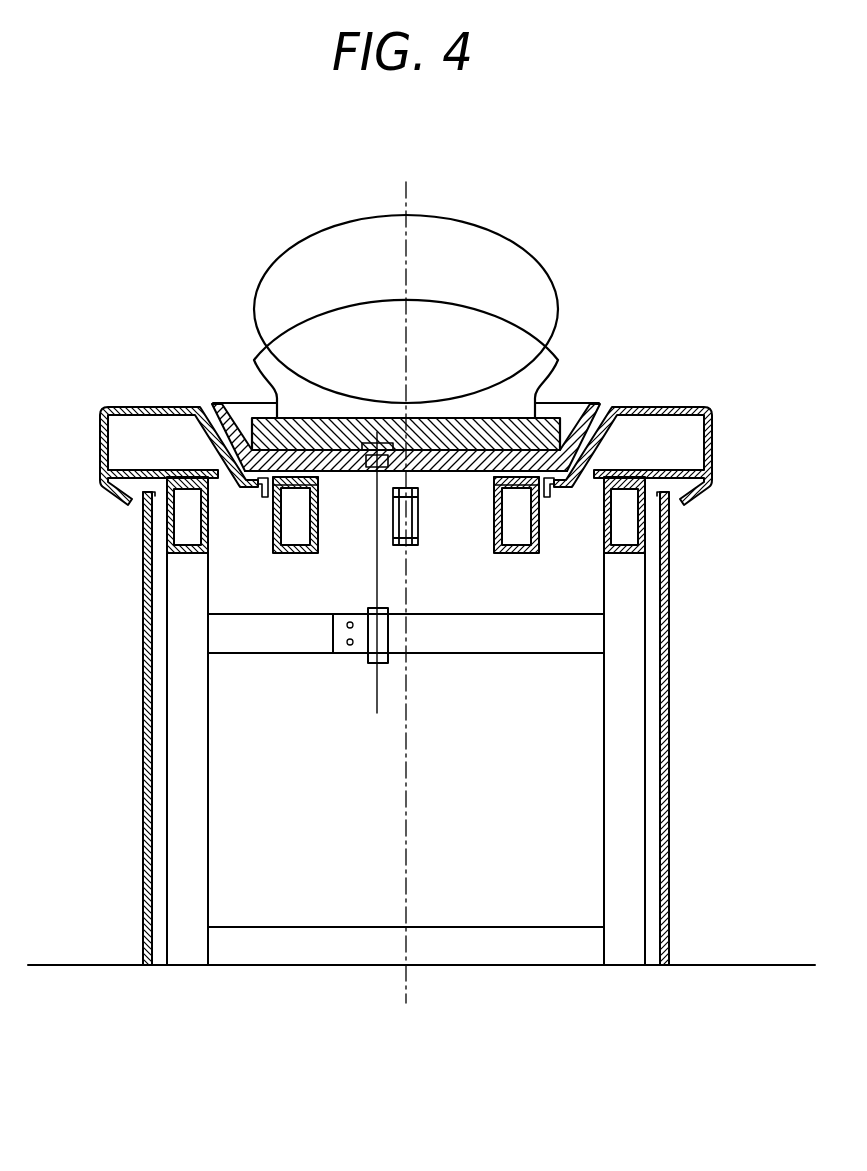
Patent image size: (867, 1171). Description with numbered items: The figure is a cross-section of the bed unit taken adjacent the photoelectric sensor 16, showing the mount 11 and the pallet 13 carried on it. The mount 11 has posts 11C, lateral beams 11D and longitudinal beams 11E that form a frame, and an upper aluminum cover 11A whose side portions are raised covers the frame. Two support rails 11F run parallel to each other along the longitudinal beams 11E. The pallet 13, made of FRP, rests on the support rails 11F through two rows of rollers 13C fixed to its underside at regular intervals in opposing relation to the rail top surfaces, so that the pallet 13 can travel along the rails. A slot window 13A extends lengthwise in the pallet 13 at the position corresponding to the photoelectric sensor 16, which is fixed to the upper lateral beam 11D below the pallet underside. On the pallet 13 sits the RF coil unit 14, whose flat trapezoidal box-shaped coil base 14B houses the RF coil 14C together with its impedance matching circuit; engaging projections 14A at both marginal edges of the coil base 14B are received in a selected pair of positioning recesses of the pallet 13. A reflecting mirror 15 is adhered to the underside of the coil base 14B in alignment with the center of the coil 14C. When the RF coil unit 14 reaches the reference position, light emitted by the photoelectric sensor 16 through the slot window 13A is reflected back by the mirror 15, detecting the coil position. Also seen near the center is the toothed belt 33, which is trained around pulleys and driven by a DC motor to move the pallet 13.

The mount 11 is at (669, 635).
The upper aluminum cover 11A is at (123, 406).
The post 11C is at (197, 779).
The lateral beam 11D is at (496, 653).
The longitudinal beam 11E is at (168, 523).
The support rail 11F is at (273, 523).
The pallet 13 is at (573, 400).
The slot window 13A is at (310, 472).
The roller 13C is at (320, 505).
The RF coil unit 14 is at (553, 258).
The engaging projection 14A is at (258, 420).
The coil base 14B is at (340, 418).
The RF coil 14C is at (522, 227).
The reflecting mirror 15 is at (410, 440).
The reflection type photoelectric sensor 16 is at (368, 661).
The toothed belt 33 is at (412, 547).